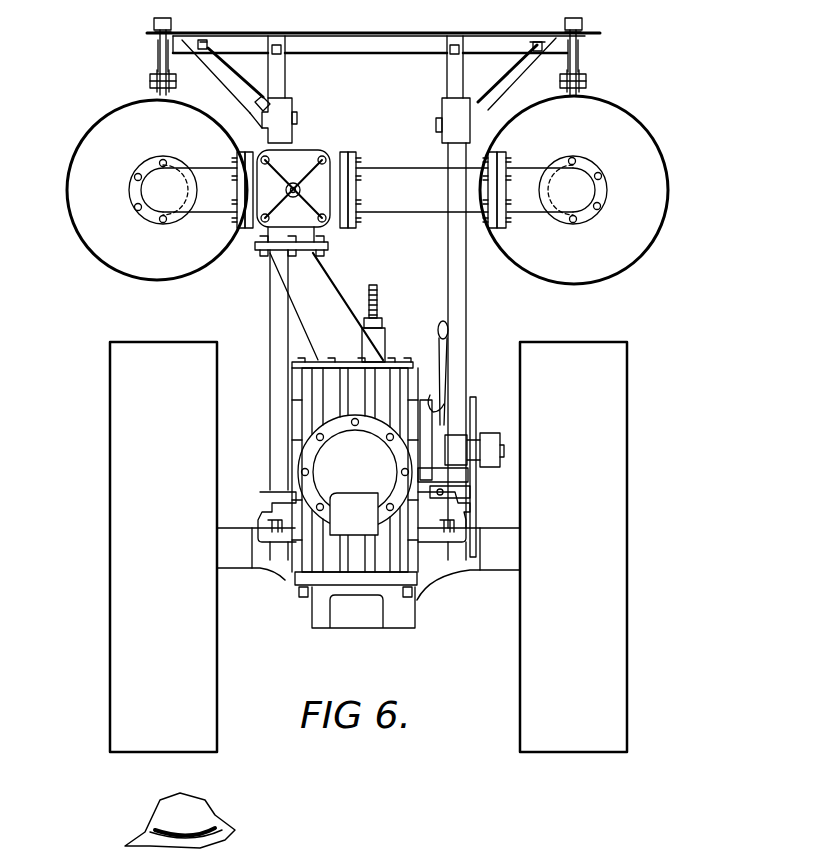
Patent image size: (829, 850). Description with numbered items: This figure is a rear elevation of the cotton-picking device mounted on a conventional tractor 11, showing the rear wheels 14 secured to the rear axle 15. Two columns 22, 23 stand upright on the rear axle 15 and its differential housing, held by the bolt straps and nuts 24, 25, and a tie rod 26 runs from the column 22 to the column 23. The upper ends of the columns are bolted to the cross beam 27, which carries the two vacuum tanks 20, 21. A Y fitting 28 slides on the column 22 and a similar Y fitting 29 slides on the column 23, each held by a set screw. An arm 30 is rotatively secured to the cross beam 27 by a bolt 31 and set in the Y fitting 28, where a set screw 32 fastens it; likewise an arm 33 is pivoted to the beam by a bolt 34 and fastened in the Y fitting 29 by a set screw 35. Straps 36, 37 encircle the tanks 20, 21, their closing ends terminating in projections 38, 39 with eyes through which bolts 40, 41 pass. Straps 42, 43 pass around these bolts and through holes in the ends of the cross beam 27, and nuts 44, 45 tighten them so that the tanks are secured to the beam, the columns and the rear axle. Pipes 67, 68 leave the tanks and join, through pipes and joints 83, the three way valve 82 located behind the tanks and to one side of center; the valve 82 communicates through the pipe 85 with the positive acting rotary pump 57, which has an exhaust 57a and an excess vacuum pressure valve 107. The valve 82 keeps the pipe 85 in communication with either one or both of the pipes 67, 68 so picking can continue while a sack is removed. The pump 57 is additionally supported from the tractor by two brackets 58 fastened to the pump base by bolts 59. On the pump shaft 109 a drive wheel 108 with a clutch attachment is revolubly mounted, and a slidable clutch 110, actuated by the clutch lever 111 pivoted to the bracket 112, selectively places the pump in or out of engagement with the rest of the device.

The tractor 11 is at (72, 485).
The rear wheels 14 is at (110, 598).
The rear axle 15 is at (455, 585).
The vacuum tank 20 is at (76, 144).
The vacuum tank 21 is at (672, 186).
The column 22 is at (268, 308).
The column 23 is at (470, 303).
The bolt straps and nuts 24 is at (276, 590).
The bolt straps and nuts 25 is at (455, 575).
The tie rod 26 is at (472, 506).
The cross beam 27 is at (343, 34).
The Y fitting 28 is at (297, 105).
The Y fitting 29 is at (442, 105).
The arm 30 is at (232, 76).
The bolt 31 is at (203, 42).
The set screw 32 is at (254, 104).
The arm 33 is at (510, 80).
The bolt 34 is at (540, 42).
The set screw 35 is at (435, 124).
The strap 36 is at (73, 235).
The strap 37 is at (648, 240).
The projection 38 is at (157, 65).
The projection 39 is at (590, 78).
The bolt 40 is at (149, 82).
The bolt 41 is at (587, 85).
The strap 42 is at (152, 48).
The strap 43 is at (580, 50).
The nut 44 is at (172, 32).
The nut 45 is at (584, 34).
The rotary pump 57 is at (308, 408).
The exhaust 57a is at (330, 466).
The brackets 58 is at (401, 622).
The bolts 59 is at (305, 600).
The pipe 67 is at (199, 175).
The pipe 68 is at (528, 173).
The three way valve 82 is at (305, 160).
The pipes and joints 83 is at (394, 205).
The pipe 85 is at (330, 292).
The excess vacuum pressure valve 107 is at (384, 312).
The drive wheel 108 is at (470, 481).
The pump shaft 109 is at (504, 450).
The slidable clutch 110 is at (456, 432).
The clutch lever 111 is at (448, 352).
The bracket 112 is at (448, 400).